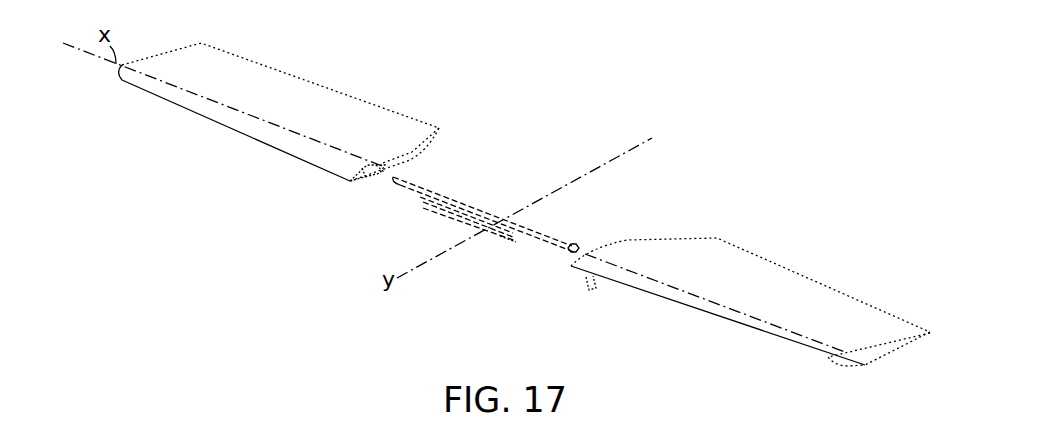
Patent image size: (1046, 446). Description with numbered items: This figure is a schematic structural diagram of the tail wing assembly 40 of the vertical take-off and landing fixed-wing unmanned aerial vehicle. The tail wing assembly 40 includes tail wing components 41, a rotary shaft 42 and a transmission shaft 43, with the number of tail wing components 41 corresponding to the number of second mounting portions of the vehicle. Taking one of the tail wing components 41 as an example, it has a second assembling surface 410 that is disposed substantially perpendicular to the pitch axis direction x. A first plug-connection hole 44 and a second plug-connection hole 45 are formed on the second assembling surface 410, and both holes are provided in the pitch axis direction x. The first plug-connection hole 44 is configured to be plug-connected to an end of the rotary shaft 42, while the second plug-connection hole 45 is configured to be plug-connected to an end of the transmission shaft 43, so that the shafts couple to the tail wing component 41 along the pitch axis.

The tail wing assembly 40 is at (846, 35).
The tail wing component 41 is at (410, 126).
The rotary shaft 42 is at (450, 200).
The transmission shaft 43 is at (513, 238).
The first plug-connection hole 44 is at (380, 172).
The second plug-connection hole 45 is at (365, 180).
The second assembling surface 410 is at (355, 182).